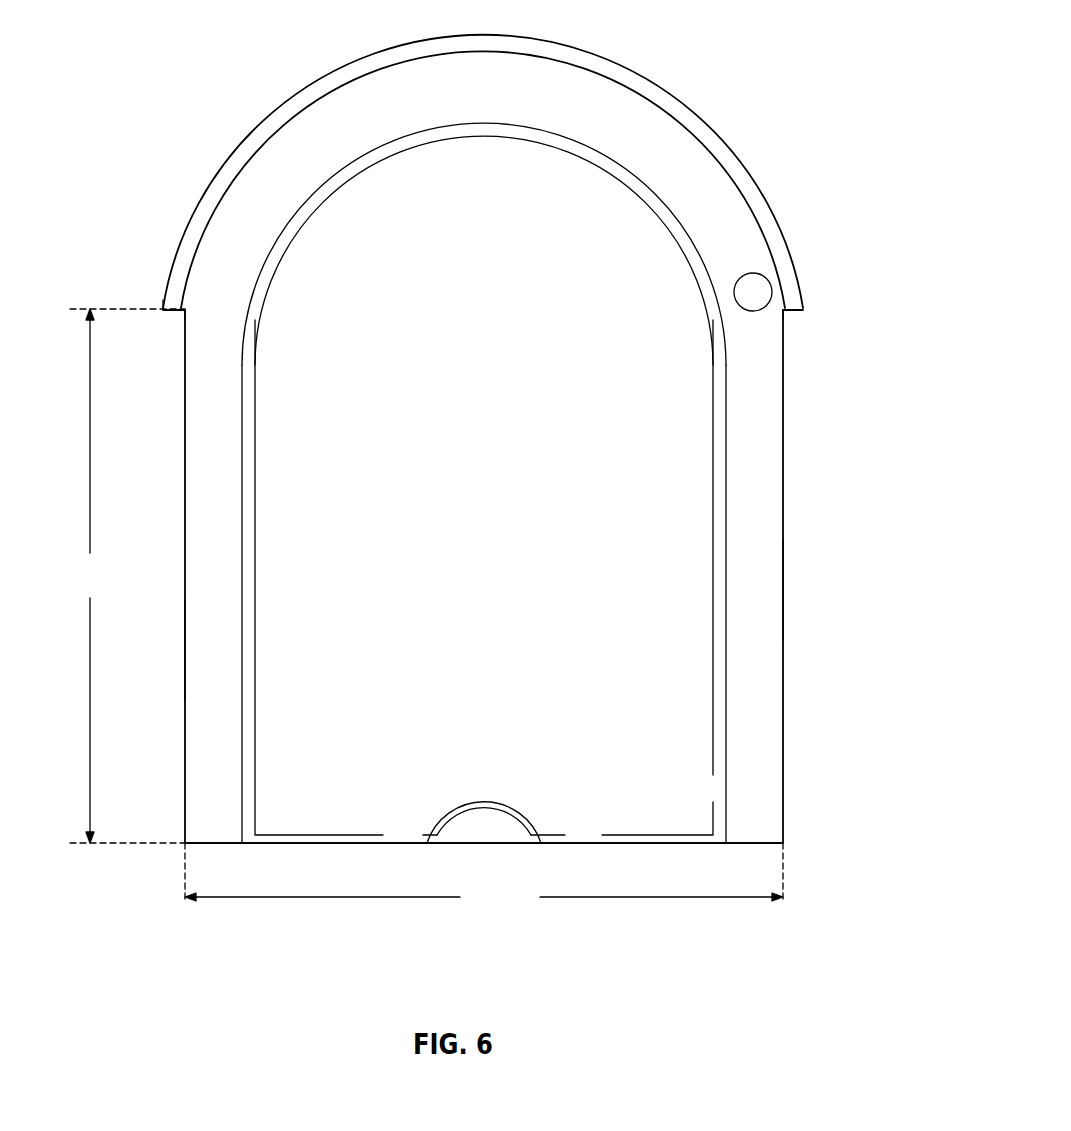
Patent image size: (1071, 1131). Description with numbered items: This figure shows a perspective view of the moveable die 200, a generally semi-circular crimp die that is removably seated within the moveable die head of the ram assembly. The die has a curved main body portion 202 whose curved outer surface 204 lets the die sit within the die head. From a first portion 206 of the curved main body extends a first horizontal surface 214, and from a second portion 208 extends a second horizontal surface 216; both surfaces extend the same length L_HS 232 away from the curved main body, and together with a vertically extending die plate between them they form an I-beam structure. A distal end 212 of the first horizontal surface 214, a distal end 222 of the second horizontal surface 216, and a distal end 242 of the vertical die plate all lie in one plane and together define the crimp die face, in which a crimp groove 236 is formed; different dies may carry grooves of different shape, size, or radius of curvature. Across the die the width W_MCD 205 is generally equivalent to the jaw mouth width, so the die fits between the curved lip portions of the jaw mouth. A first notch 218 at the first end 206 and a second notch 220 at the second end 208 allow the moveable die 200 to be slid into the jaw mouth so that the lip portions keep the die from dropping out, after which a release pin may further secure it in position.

The moveable die 200 is at (815, 482).
The curved main body portion 202 is at (484, 483).
The curved outer surface 204 is at (692, 112).
The width W_MCD 205 is at (492, 910).
The first portion 206 is at (162, 307).
The second portion 208 is at (806, 307).
The distal end of first horizontal surface 212 is at (210, 846).
The first horizontal surface 214 is at (183, 668).
The second horizontal surface 216 is at (785, 590).
The first notch 218 is at (170, 313).
The second notch 220 is at (794, 312).
The distal end of second horizontal surface 222 is at (615, 846).
The length L_HS 232 is at (72, 553).
The crimp groove 236 is at (482, 808).
The distal end of vertical die plate 242 is at (377, 846).